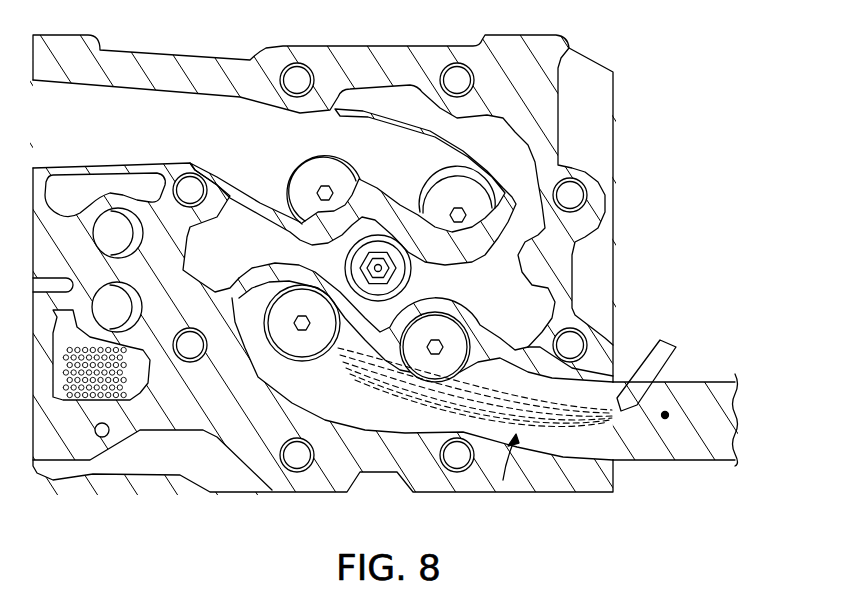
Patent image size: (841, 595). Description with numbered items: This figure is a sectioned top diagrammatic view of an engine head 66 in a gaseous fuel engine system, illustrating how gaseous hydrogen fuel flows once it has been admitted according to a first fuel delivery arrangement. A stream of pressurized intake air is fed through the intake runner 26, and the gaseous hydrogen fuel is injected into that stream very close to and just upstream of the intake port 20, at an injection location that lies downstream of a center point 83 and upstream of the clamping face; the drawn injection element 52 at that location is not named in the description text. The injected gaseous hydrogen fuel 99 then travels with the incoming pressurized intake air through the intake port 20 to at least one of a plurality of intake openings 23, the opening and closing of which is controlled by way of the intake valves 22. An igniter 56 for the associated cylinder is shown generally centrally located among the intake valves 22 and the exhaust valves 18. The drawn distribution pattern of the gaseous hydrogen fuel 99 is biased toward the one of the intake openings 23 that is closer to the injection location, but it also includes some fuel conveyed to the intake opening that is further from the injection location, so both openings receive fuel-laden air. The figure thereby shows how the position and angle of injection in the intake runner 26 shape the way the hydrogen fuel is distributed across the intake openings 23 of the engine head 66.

The exhaust valves 18 is at (306, 178).
The intake valves 22 is at (305, 292).
The intake openings 23 is at (256, 283).
The igniter 56 is at (388, 268).
The sensor probe 52 is at (652, 340).
The intake runner 26 is at (692, 380).
The center point 83 is at (664, 424).
The gaseous hydrogen fuel 99 is at (507, 471).
The intake port 20 is at (547, 450).
The engine head 66 is at (580, 480).